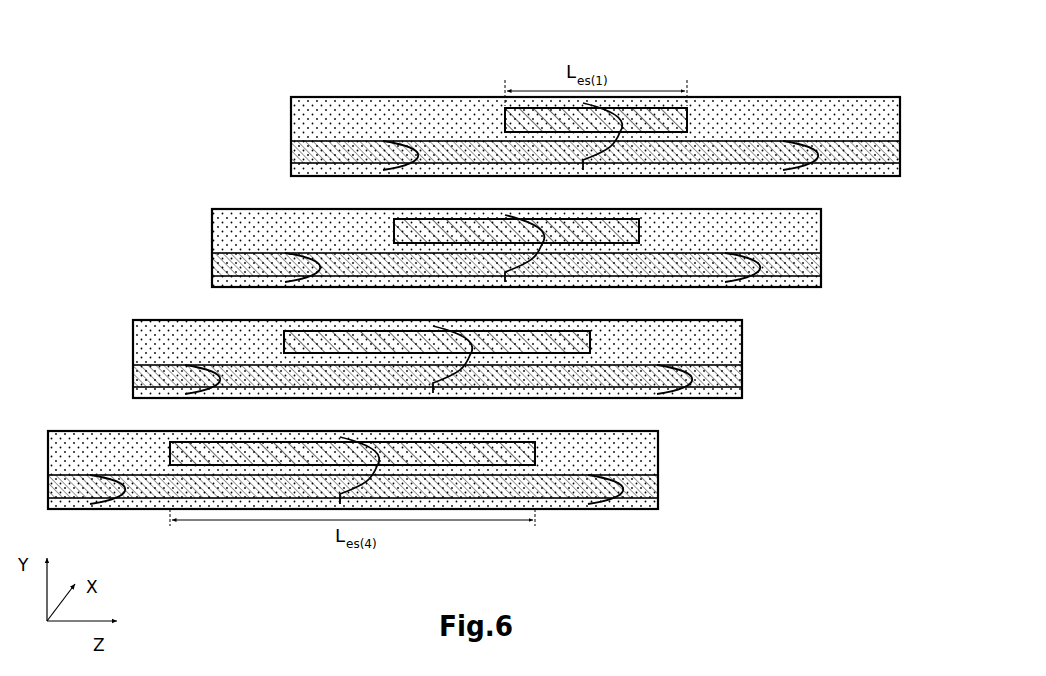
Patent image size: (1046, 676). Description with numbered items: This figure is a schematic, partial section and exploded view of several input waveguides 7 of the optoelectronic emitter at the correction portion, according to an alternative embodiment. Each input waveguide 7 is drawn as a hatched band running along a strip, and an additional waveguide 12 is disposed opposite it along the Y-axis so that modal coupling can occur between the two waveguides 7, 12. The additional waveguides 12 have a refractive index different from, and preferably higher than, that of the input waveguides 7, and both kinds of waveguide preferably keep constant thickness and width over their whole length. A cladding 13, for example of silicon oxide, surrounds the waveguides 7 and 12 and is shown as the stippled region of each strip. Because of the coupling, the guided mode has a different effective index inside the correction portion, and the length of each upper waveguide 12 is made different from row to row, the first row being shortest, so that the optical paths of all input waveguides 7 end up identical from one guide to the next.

The additional waveguide 12 is at (688, 435).
The cladding 13 is at (291, 124).
The input waveguide 7 is at (688, 497).